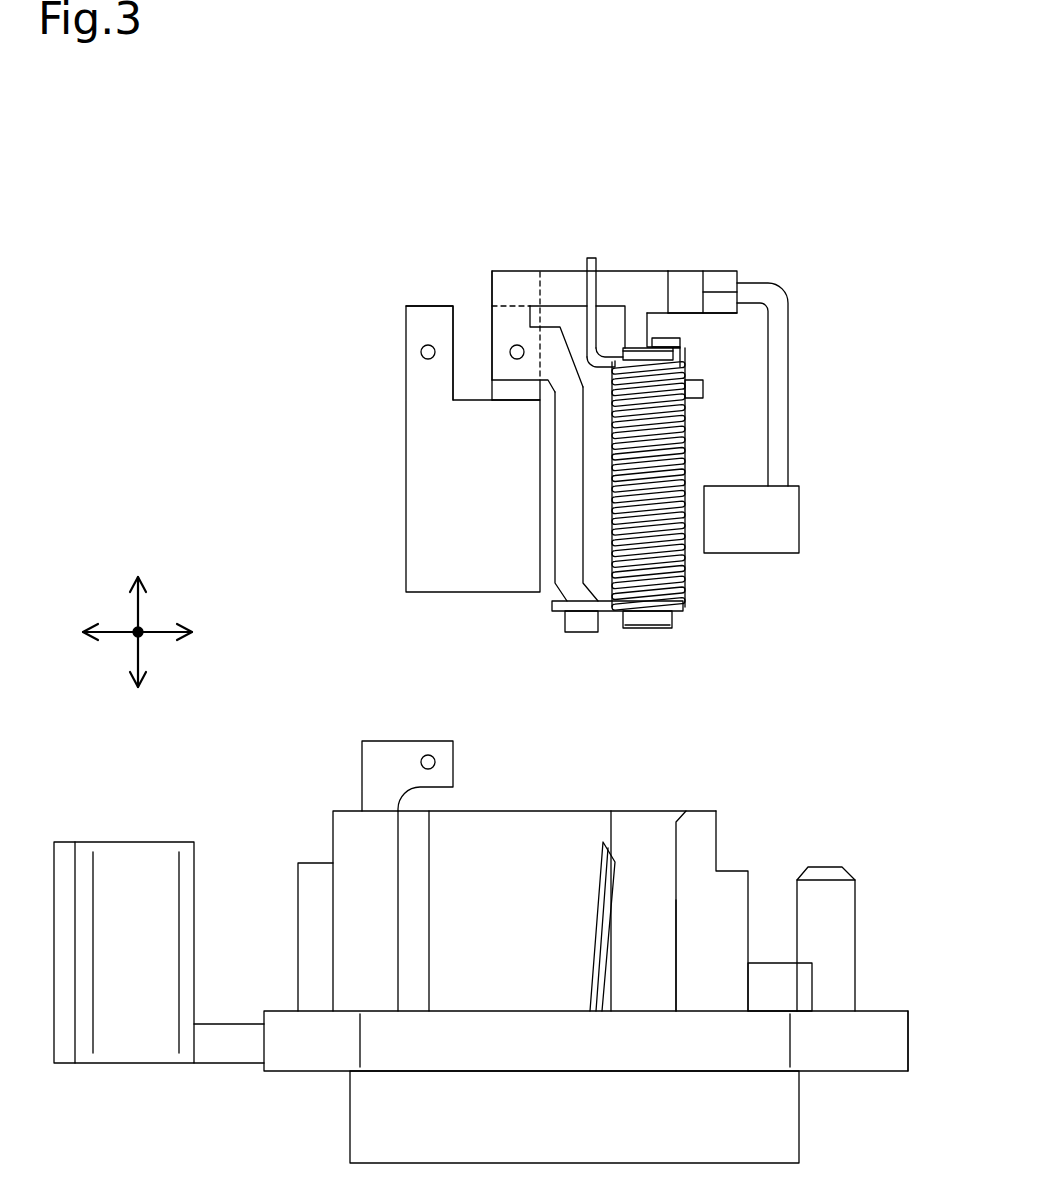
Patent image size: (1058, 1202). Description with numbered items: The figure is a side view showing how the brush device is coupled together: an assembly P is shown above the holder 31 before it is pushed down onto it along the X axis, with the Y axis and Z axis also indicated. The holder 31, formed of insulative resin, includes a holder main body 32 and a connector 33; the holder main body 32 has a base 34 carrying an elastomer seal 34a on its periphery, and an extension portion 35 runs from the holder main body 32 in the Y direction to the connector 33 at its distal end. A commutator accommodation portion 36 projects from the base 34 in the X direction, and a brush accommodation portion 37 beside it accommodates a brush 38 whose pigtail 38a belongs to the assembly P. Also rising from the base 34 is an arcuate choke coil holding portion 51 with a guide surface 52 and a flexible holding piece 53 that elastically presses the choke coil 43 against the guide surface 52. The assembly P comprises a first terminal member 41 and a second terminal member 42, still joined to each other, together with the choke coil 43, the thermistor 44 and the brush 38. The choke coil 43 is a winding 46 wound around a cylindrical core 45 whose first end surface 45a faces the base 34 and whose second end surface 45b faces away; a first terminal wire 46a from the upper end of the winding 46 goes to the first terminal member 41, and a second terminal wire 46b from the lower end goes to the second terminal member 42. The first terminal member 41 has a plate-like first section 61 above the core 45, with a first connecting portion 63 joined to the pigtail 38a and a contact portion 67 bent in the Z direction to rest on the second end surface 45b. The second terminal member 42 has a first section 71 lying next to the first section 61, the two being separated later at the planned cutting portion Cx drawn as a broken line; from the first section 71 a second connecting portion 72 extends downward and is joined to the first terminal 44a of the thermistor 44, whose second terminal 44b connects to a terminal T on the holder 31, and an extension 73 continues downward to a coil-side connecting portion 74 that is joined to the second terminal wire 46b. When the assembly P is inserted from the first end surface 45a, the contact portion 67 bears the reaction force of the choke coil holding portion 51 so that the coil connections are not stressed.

The holder 31 is at (308, 1072).
The holder main body 32 is at (840, 1072).
The connector 33 is at (132, 838).
The base 34 is at (574, 1107).
The seal 34a is at (503, 1052).
The extension portion 35 is at (230, 1023).
The commutator accommodation portion 36 is at (513, 818).
The brush accommodation portion 37 is at (772, 963).
The brush 38 is at (800, 517).
The pigtail 38a is at (790, 384).
The first terminal member 41 is at (703, 276).
The second terminal member 42 is at (518, 270).
The choke coil 43 is at (688, 450).
The thermistor 44 is at (415, 490).
The first terminal 44a is at (513, 390).
The second terminal 44b is at (415, 323).
The core 45 is at (668, 618).
The first end surface 45a is at (643, 632).
The second end surface 45b is at (635, 345).
The winding 46 is at (677, 572).
The first terminal wire 46a is at (595, 257).
The second terminal wire 46b is at (556, 618).
The choke coil holding portion 51 is at (676, 983).
The guide surface 52 is at (645, 828).
The holding piece 53 is at (598, 875).
The first section 61 is at (665, 280).
The first connecting portion 63 is at (720, 282).
The contact portion 67 is at (663, 331).
The first section 71 is at (497, 270).
The second connecting portion 72 is at (500, 317).
The extension 73 is at (565, 508).
The coil-side connecting portion 74 is at (585, 632).
The assembly P is at (783, 247).
The terminal T is at (415, 740).
The planned cutting portion Cx is at (540, 278).
The X-axis direction X is at (138, 617).
The Y-axis direction Y is at (150, 633).
The Z-axis direction Z is at (142, 627).